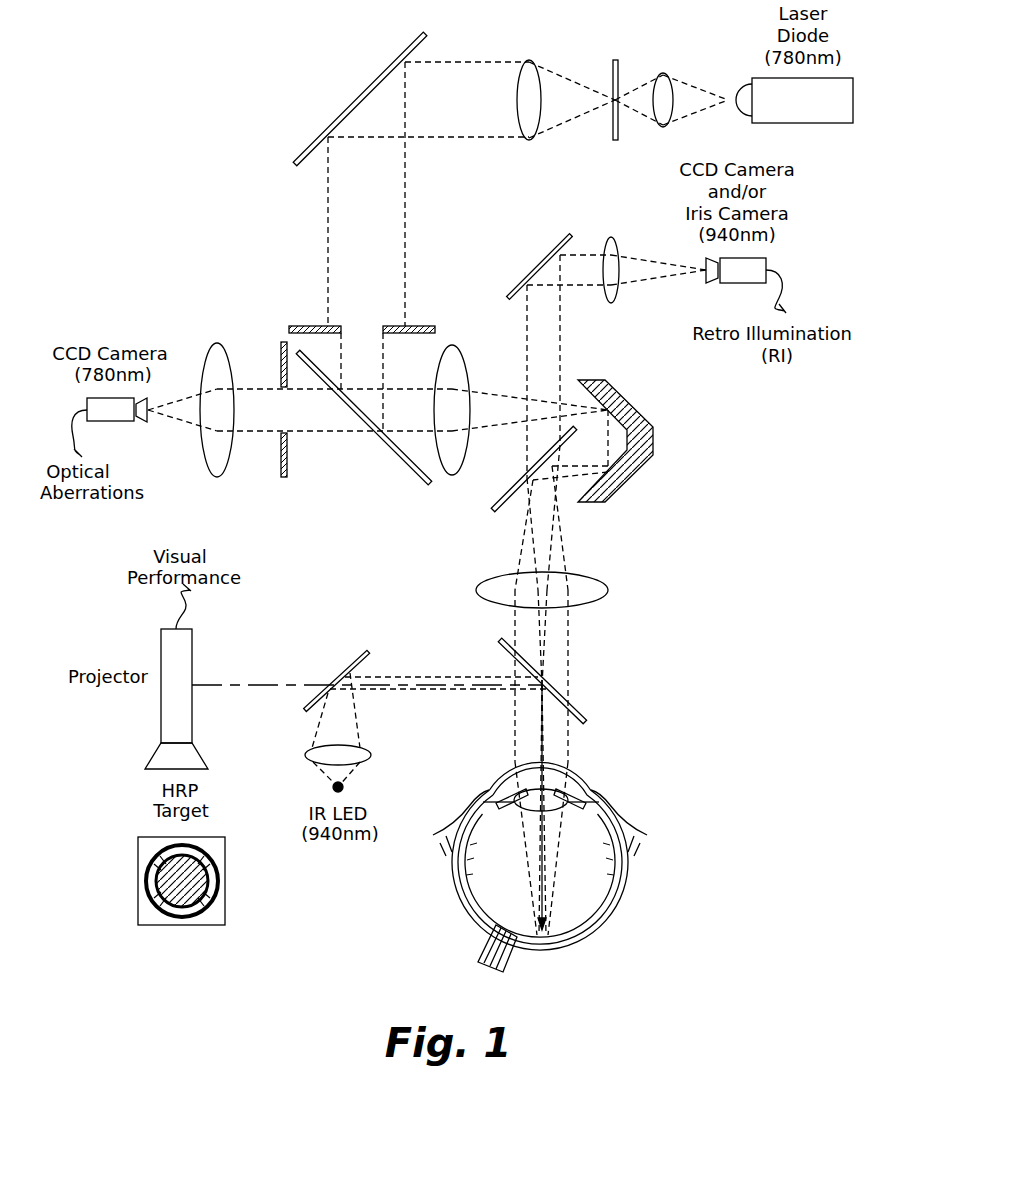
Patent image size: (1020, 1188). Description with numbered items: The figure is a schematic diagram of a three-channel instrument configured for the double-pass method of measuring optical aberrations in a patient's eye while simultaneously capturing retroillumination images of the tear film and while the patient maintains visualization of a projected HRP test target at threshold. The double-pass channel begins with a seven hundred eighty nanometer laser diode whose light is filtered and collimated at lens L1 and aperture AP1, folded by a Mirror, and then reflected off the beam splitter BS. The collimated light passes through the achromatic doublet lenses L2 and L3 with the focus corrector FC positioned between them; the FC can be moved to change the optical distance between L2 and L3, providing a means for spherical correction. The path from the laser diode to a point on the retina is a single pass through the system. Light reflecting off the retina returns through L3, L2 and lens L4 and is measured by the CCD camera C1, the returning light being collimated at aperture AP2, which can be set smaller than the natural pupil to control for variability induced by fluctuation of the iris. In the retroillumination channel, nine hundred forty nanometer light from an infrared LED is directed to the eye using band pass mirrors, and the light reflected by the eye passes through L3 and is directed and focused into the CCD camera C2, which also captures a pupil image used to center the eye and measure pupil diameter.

The mirror Mirror is at (360, 99).
The lens L1 is at (529, 86).
The achromatic doublet lens L2 is at (464, 409).
The achromatic doublet lens L3 is at (549, 583).
The lens L4 is at (217, 396).
The aperture AP1 is at (372, 317).
The aperture AP2 is at (285, 428).
The beam splitter BS is at (364, 417).
The focus corrector FC is at (624, 441).
The CCD camera C1 is at (117, 410).
The CCD camera C2 is at (736, 270).